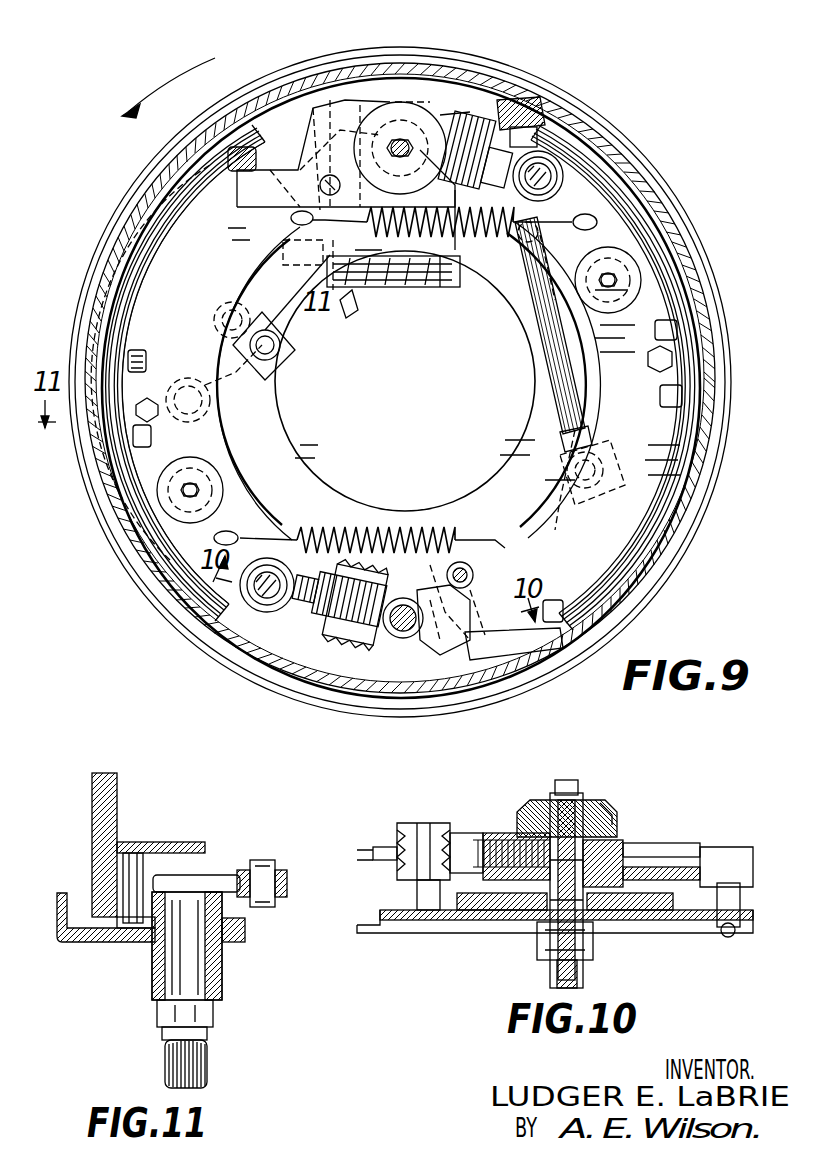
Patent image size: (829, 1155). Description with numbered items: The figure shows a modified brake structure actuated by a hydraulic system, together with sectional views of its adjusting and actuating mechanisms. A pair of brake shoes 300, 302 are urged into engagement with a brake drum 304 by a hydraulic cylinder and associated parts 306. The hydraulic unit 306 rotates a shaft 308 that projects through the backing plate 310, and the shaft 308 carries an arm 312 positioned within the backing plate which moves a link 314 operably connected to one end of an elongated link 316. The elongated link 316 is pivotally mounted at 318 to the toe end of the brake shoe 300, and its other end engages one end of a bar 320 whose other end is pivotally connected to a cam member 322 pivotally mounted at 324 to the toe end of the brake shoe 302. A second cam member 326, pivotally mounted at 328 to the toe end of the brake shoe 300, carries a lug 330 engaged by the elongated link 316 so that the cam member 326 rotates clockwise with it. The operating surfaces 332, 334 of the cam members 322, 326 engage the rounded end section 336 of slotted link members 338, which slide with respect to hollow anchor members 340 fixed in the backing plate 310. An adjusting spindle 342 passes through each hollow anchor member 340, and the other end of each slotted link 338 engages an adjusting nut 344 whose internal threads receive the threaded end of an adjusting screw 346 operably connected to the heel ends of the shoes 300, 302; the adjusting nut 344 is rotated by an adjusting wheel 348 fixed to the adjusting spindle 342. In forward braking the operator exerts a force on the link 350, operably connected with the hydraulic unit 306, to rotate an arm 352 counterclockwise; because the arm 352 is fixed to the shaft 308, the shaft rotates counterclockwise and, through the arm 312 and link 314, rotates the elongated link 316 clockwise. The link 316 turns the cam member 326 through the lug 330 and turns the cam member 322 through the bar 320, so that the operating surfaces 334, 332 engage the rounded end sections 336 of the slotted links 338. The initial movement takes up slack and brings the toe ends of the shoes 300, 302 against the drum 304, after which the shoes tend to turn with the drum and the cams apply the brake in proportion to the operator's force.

In FIG. 9, the brake shoe 300 is at (185, 274).
In FIG. 11, the brake shoe 300 is at (117, 810).
In FIG. 10, the brake shoe 300 is at (390, 857).
In FIG. 9, the brake shoe 302 is at (655, 462).
In FIG. 10, the brake shoe 302 is at (680, 853).
In FIG. 9, the brake drum 304 is at (712, 395).
In FIG. 9, the hydraulic cylinder and associated parts 306 is at (398, 278).
In FIG. 9, the shaft 308 is at (195, 400).
In FIG. 11, the shaft 308 is at (187, 968).
In FIG. 9, the backing plate 310 is at (713, 292).
In FIG. 11, the backing plate 310 is at (67, 933).
In FIG. 10, the backing plate 310 is at (443, 913).
In FIG. 9, the arm 312 is at (247, 382).
In FIG. 11, the arm 312 is at (208, 883).
In FIG. 9, the link 314 is at (290, 337).
In FIG. 11, the link 314 is at (287, 897).
In FIG. 9, the elongated link 316 is at (508, 240).
In FIG. 9, the pivotal mounting 318 is at (312, 135).
In FIG. 9, the bar 320 is at (557, 372).
In FIG. 9, the cam member 322 is at (547, 513).
In FIG. 10, the cam member 322 is at (673, 873).
In FIG. 9, the pivotal mounting 324 is at (460, 562).
In FIG. 9, the cam member 326 is at (195, 195).
In FIG. 9, the pivotal mounting 328 is at (372, 284).
In FIG. 9, the lug 330 is at (243, 224).
In FIG. 9, the operating surface 332 is at (485, 655).
In FIG. 9, the operating surface 334 is at (327, 133).
In FIG. 9, the rounded end section 336 is at (425, 105).
In FIG. 9, the slotted link member 338 is at (420, 97).
In FIG. 10, the slotted link member 338 is at (610, 873).
In FIG. 9, the anchor member 340 is at (358, 645).
In FIG. 10, the anchor member 340 is at (590, 840).
In FIG. 9, the adjusting spindle 342 is at (440, 118).
In FIG. 10, the adjusting spindle 342 is at (567, 827).
In FIG. 9, the adjusting nut 344 is at (483, 160).
In FIG. 10, the adjusting nut 344 is at (500, 870).
In FIG. 9, the adjusting screw 346 is at (545, 152).
In FIG. 10, the adjusting screw 346 is at (470, 843).
In FIG. 9, the adjusting wheel 348 is at (500, 113).
In FIG. 10, the adjusting wheel 348 is at (603, 812).
In FIG. 9, the link 350 is at (335, 290).
In FIG. 9, the arm 352 is at (122, 330).